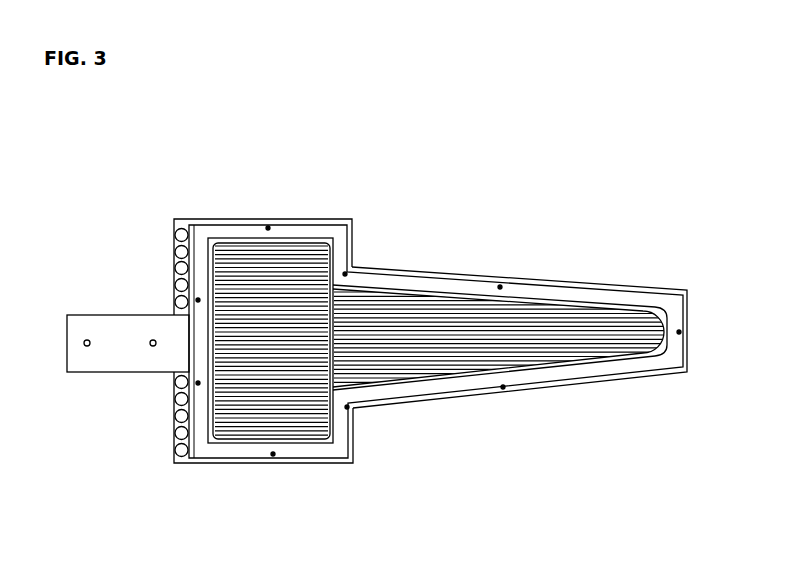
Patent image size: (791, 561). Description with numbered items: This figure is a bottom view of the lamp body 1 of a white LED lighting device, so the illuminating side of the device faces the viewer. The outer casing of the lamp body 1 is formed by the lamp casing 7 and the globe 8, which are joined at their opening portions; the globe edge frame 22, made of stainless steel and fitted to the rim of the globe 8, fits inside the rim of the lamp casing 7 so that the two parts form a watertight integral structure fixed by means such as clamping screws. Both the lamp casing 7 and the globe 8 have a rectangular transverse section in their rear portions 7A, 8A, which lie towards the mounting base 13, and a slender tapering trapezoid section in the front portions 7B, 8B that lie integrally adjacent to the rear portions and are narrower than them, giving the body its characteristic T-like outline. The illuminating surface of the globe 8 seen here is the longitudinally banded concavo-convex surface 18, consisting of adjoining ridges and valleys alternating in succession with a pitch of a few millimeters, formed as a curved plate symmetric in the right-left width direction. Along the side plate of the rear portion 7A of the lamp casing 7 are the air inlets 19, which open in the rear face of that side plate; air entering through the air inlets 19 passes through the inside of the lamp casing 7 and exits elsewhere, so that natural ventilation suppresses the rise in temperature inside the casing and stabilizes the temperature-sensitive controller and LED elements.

The lamp body 1 is at (496, 262).
The lamp casing 7 is at (436, 268).
The rear portion of lamp casing 7A is at (282, 219).
The front portion of lamp casing 7B is at (540, 278).
The globe 8 is at (455, 384).
The rear portion of globe 8A is at (307, 443).
The front portion of globe 8B is at (557, 365).
The mounting base 13 is at (95, 322).
The longitudinally banded concavo-convex surface 18 is at (258, 310).
The air inlet 19 is at (178, 267).
The globe edge frame 22 is at (377, 397).